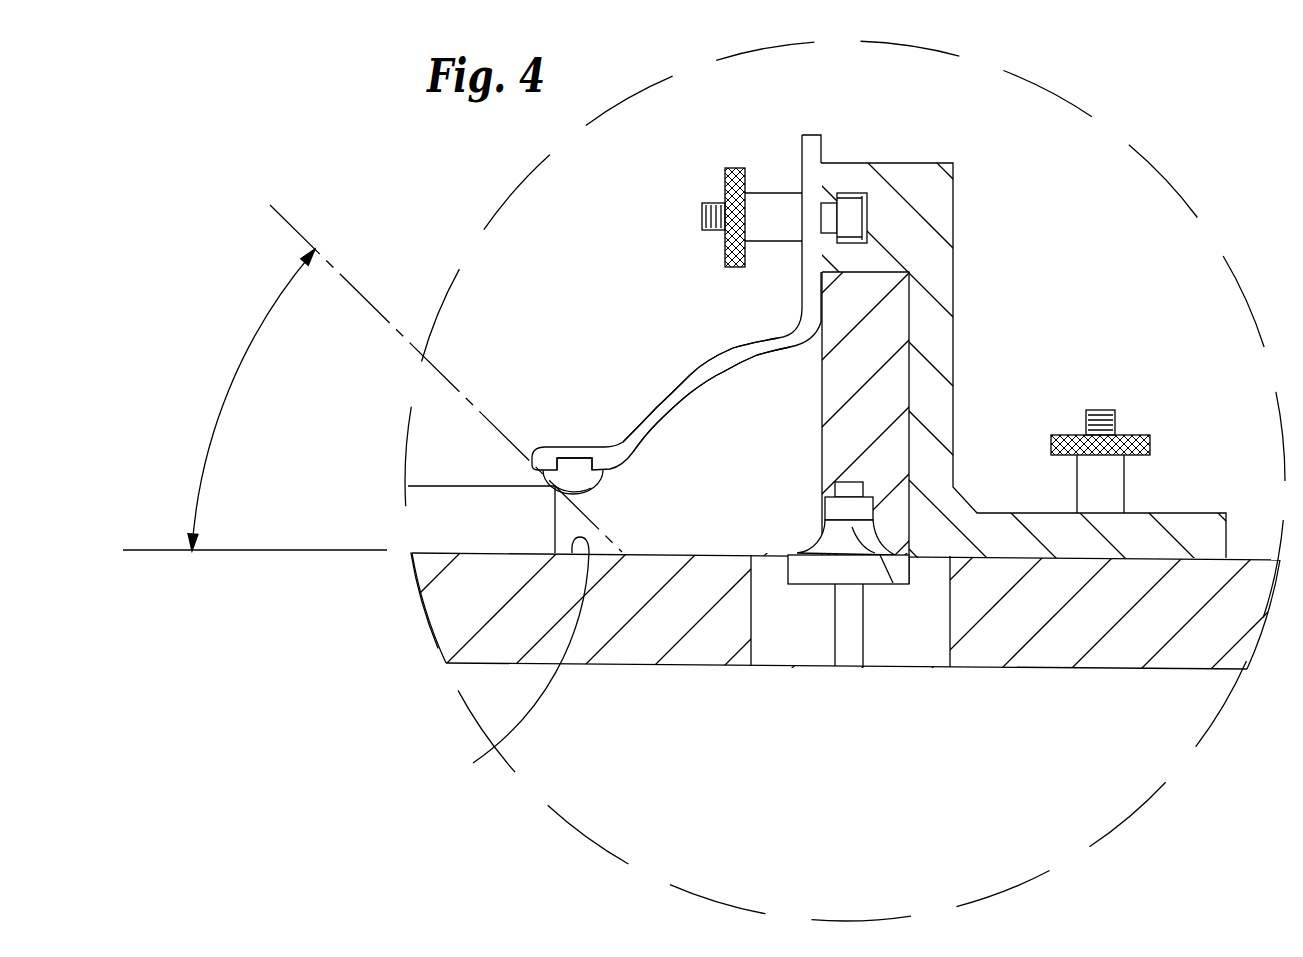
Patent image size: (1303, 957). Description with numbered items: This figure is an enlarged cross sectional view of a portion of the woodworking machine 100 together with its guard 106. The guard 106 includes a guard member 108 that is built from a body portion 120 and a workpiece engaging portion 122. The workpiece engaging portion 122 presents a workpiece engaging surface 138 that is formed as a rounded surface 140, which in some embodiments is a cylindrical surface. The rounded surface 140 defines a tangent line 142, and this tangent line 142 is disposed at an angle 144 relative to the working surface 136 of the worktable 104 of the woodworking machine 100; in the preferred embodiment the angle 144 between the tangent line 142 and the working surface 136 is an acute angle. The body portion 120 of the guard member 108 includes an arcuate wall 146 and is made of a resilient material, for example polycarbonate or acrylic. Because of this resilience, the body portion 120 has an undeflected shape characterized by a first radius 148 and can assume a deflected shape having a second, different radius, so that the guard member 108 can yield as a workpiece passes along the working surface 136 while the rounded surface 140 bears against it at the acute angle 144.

The woodworking machine 100 is at (503, 686).
The worktable 104 is at (470, 580).
The guard 106 is at (552, 260).
The guard member 108 is at (731, 345).
The body portion 120 is at (704, 366).
The workpiece engaging portion 122 is at (607, 483).
The working surface 136 is at (511, 663).
The workpiece engaging surface 138 is at (588, 497).
The rounded surface 140 is at (567, 476).
The tangent line 142 is at (466, 332).
The angle 144 is at (230, 387).
The arcuate wall 146 is at (673, 388).
The first radius 148 is at (700, 394).